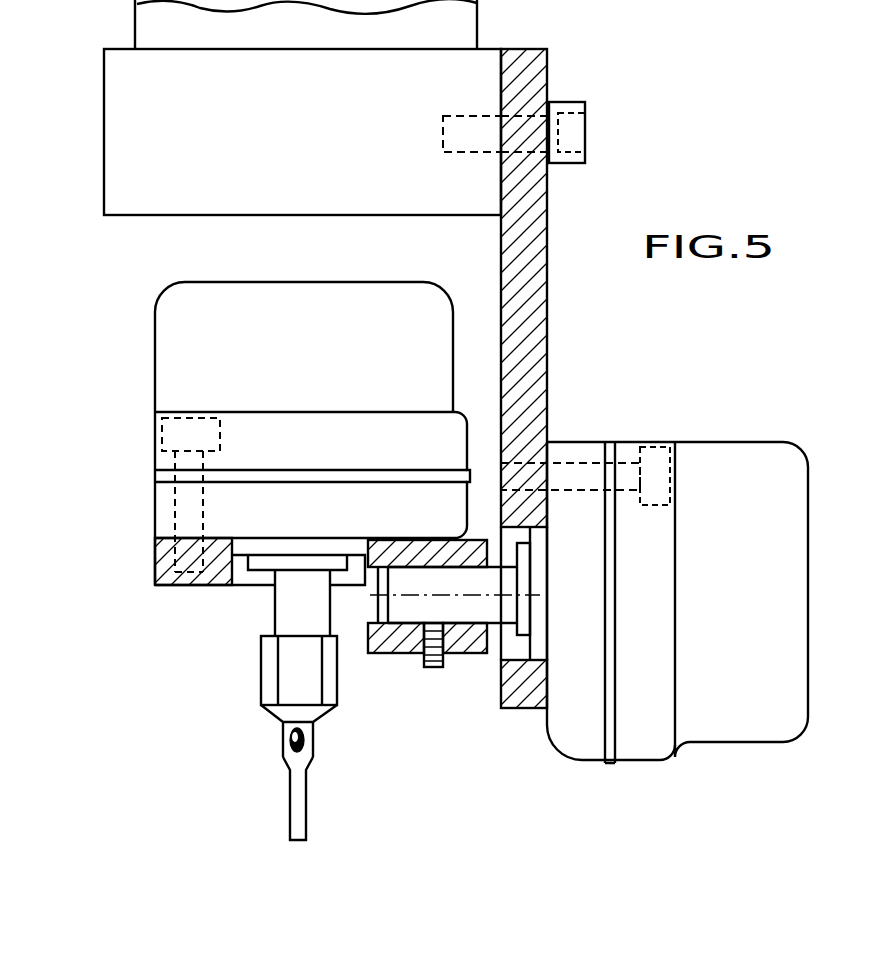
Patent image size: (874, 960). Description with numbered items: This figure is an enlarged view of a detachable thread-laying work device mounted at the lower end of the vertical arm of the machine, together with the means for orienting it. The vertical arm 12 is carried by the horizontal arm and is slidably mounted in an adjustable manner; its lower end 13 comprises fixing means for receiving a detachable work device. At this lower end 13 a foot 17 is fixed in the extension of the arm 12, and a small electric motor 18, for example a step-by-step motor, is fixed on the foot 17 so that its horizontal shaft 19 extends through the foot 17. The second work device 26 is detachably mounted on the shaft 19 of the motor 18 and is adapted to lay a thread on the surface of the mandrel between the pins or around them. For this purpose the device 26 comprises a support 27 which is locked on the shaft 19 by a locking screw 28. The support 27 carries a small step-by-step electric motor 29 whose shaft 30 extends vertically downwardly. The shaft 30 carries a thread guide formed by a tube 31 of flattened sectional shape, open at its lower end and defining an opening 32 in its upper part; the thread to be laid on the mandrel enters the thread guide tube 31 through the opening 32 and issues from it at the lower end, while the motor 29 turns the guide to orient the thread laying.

The vertical arm 12 is at (150, 28).
The lower end of the vertical arm 13 is at (136, 117).
The foot 17 is at (528, 338).
The electric motor 18 is at (703, 467).
The horizontal shaft 19 is at (472, 610).
The second work device 26 is at (258, 659).
The support 27 is at (380, 640).
The locking screw 28 is at (426, 669).
The step-by-step electric motor 29 is at (196, 328).
The shaft 30 is at (295, 608).
The thread guide tube 31 is at (288, 792).
The opening 32 is at (290, 735).